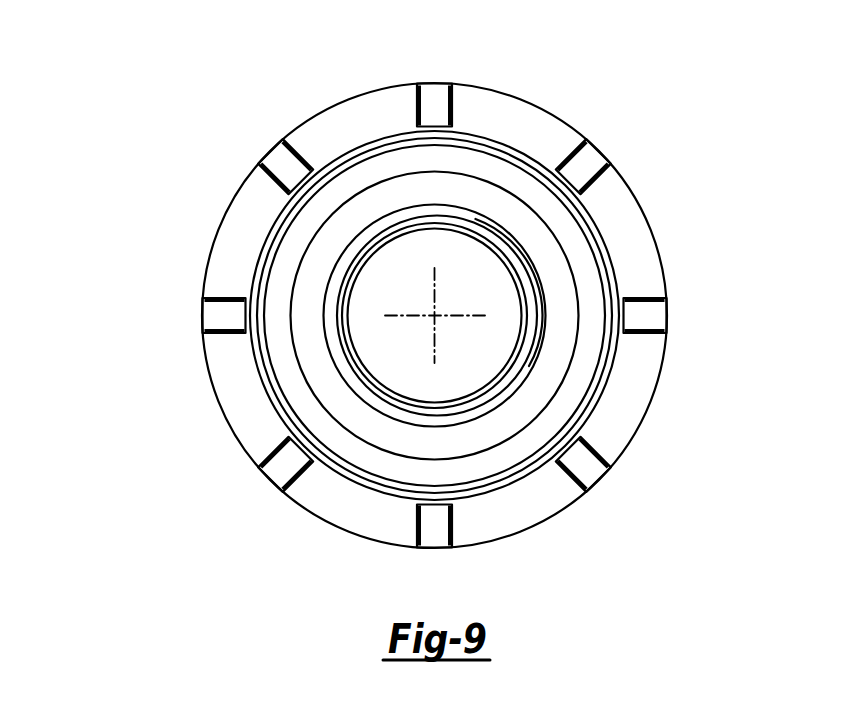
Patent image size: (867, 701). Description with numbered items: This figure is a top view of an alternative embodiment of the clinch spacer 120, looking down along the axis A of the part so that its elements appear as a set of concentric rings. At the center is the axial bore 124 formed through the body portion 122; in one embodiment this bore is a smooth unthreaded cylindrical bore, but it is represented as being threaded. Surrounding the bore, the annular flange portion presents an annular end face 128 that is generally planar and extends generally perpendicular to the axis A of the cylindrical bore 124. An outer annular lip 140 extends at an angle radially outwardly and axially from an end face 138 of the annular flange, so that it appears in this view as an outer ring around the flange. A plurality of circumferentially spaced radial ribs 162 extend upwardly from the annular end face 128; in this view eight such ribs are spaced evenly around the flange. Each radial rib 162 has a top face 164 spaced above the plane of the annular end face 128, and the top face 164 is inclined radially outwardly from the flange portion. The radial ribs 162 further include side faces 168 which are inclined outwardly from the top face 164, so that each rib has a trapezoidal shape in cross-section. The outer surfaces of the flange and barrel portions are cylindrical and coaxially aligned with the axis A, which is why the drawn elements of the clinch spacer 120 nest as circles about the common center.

The clinch spacer 120 is at (188, 223).
The body portion 122 is at (546, 103).
The axial bore 124 is at (482, 228).
The annular end face 128 is at (618, 208).
The end face 138 is at (309, 291).
The outer annular lip 140 is at (270, 208).
The radial ribs 162 is at (600, 144).
The top face 164 is at (435, 105).
The side faces 168 is at (283, 143).
The axis A is at (437, 318).